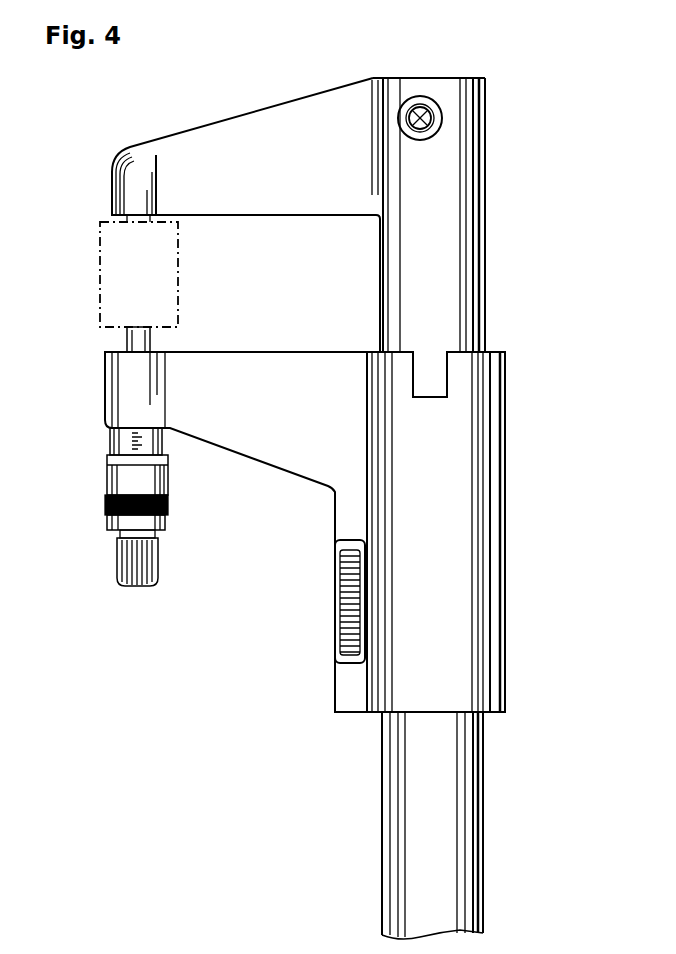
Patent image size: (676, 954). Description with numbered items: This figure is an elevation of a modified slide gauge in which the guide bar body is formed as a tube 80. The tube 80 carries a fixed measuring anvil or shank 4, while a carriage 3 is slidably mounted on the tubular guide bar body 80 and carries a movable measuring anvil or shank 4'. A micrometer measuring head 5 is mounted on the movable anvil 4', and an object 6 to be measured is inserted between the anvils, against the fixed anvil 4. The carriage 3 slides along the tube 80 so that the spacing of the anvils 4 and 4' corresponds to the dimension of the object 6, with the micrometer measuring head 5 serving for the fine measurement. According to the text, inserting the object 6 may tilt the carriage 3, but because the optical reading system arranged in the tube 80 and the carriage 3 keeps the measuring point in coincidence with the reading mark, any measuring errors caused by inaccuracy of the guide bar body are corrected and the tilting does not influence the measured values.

The carriage 3 is at (482, 515).
The fixed measuring anvil or shank 4 is at (277, 215).
The movable measuring anvil or shank 4' is at (305, 515).
The micrometer 5 is at (125, 478).
The object to be measured 6 is at (165, 268).
The tube 80 is at (452, 231).